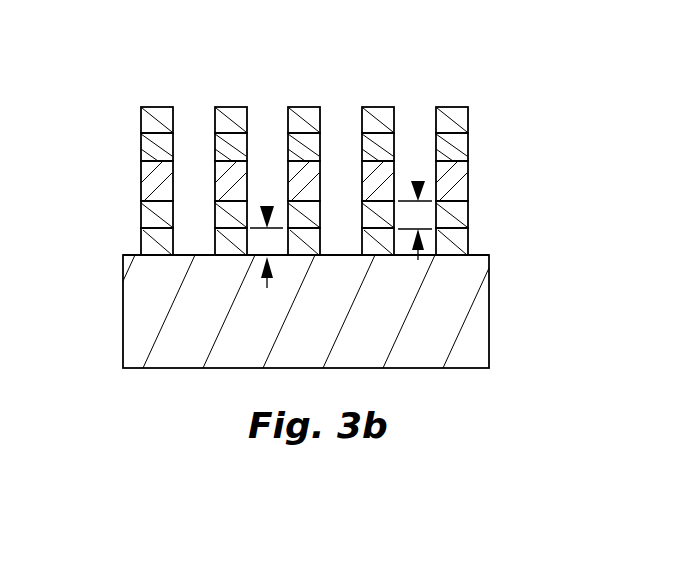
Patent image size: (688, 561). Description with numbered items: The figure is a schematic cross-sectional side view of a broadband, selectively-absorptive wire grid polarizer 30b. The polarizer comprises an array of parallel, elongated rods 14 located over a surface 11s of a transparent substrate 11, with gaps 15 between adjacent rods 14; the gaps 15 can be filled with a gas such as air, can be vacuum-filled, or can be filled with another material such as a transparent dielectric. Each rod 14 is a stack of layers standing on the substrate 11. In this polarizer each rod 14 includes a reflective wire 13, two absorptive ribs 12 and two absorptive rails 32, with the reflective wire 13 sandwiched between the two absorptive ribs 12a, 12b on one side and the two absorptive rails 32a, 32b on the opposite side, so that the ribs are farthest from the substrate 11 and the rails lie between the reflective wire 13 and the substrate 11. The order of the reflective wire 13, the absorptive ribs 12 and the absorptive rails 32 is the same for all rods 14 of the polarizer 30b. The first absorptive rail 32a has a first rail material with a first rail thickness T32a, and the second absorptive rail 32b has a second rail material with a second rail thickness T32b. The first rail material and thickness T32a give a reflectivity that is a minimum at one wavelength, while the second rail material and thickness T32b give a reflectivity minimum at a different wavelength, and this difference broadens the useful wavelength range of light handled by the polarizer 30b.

The selectively-absorptive wire grid polarizer 30b is at (78, 355).
The transparent substrate 11 is at (313, 326).
The surface of the substrate 11s is at (478, 254).
The rod 14 is at (229, 85).
The gap 15 is at (193, 153).
The absorptive ribs 12 is at (322, 138).
The absorptive rib 12a is at (492, 147).
The absorptive rib 12b is at (112, 119).
The reflective wire 13 is at (108, 184).
The absorptive rails 32 is at (312, 242).
The first absorptive rail 32a is at (492, 217).
The second absorptive rail 32b is at (116, 243).
The first rail thickness T32a is at (418, 181).
The second rail thickness T32b is at (267, 206).